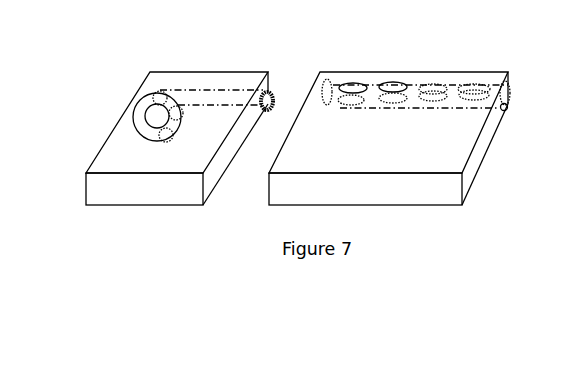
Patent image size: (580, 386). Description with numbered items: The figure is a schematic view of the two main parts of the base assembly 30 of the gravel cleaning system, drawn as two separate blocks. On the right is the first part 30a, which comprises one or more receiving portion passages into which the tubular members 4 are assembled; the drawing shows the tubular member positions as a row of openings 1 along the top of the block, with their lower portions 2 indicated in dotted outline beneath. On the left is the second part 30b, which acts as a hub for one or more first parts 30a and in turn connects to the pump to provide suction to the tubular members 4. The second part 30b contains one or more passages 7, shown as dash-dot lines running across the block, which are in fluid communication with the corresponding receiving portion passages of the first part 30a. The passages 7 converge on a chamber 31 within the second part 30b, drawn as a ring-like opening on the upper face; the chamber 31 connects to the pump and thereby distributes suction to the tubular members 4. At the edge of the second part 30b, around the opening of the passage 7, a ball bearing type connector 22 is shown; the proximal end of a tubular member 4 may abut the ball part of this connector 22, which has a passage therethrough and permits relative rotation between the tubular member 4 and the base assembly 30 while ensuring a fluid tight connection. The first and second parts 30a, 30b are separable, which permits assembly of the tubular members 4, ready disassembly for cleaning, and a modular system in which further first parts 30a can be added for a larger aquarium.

The well openings 1 is at (365, 82).
The well bottoms / lower chambers 2 is at (397, 103).
The tubular member 4 is at (334, 85).
The passage 7 is at (193, 100).
The ball bearing type connector 22 is at (271, 94).
The base assembly 30 is at (298, 218).
The first part 30a is at (263, 208).
The second part 30b is at (155, 205).
The chamber 31 is at (153, 110).